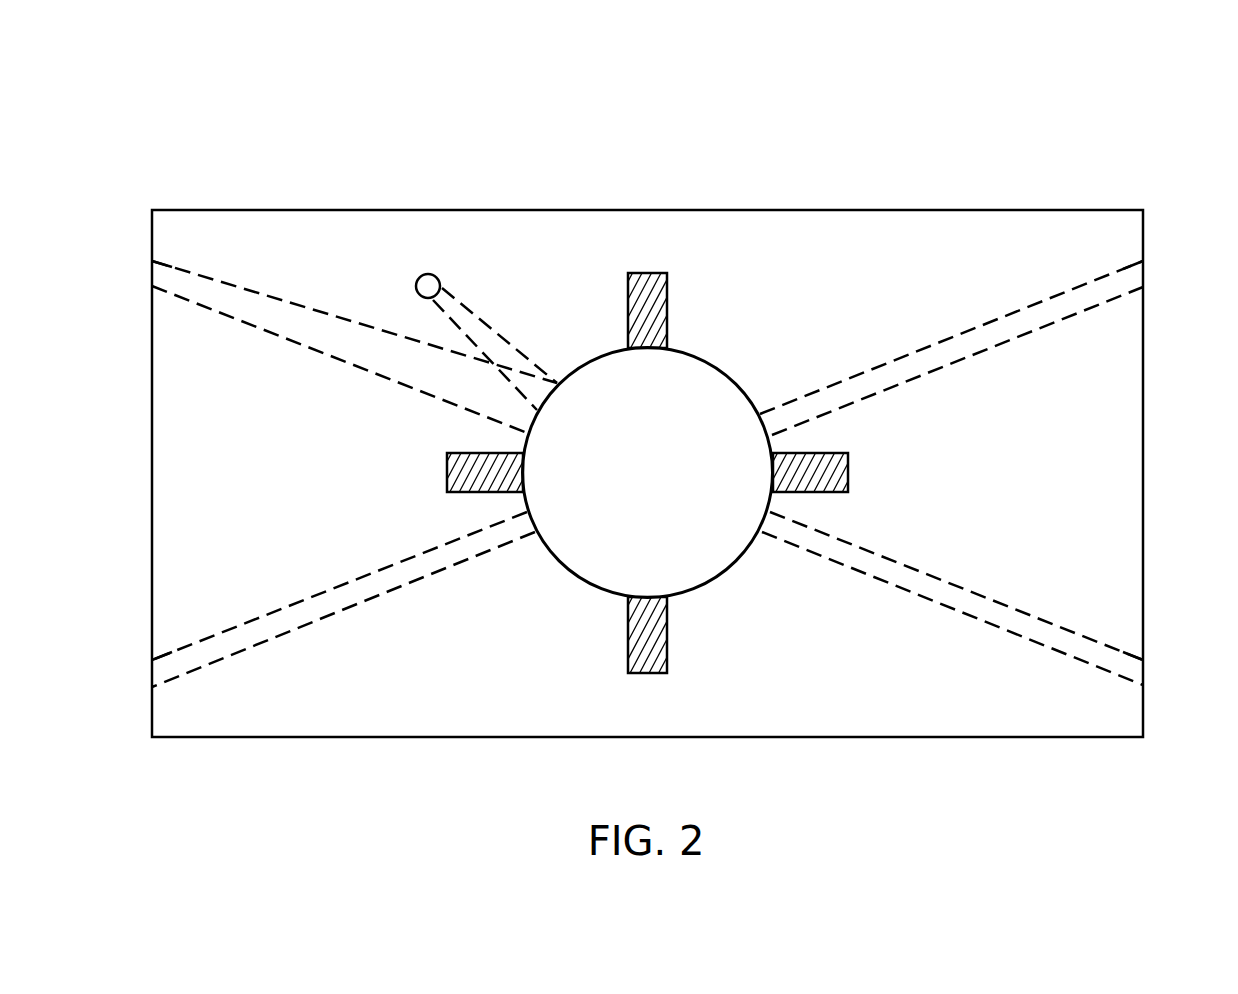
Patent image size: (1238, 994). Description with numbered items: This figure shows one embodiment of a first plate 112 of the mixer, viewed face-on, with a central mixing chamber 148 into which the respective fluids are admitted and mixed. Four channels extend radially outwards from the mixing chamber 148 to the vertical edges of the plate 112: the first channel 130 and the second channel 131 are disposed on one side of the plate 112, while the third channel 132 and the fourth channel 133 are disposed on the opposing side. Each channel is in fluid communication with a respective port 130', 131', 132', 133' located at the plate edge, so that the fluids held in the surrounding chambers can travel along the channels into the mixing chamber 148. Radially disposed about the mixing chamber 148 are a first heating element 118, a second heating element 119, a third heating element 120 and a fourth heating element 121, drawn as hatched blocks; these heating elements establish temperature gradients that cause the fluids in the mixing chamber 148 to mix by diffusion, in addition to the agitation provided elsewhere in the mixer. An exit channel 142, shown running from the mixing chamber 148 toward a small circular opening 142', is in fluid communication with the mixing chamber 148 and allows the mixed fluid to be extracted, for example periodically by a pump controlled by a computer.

The plate 112 is at (659, 387).
The first heating element 118 is at (448, 470).
The second heating element 119 is at (660, 640).
The third heating element 120 is at (848, 470).
The fourth heating element 121 is at (660, 305).
The first channel 130 is at (343, 605).
The port 130' is at (120, 657).
The second channel 131 is at (354, 347).
The port 131' is at (122, 260).
The third channel 132 is at (952, 605).
The port 132' is at (1173, 655).
The fourth channel 133 is at (951, 346).
The port 133' is at (1173, 260).
The exit channel 142 is at (495, 340).
The cable anchor 142' is at (394, 272).
The mixing chamber 148 is at (590, 562).